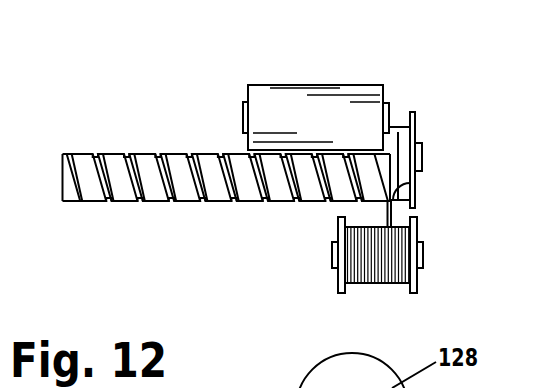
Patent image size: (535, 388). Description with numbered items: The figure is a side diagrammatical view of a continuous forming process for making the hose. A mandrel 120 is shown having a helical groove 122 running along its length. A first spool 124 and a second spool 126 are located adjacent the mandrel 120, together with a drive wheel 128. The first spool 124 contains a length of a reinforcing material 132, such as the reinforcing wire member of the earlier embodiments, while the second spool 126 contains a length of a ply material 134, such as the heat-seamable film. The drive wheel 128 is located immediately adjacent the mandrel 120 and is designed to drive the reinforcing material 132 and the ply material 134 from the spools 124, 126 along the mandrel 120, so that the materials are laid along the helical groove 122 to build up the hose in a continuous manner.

The mandrel 120 is at (81, 165).
The helical groove 122 is at (127, 163).
The first spool 124 is at (417, 279).
The second spool 126 is at (415, 126).
The drive wheel 128 is at (312, 98).
The reinforcing material 132 is at (392, 218).
The ply material 134 is at (393, 145).